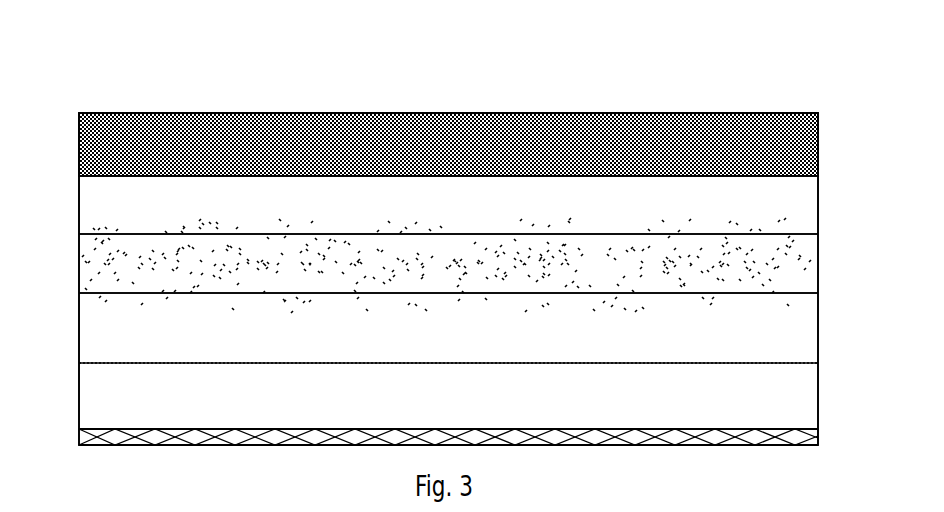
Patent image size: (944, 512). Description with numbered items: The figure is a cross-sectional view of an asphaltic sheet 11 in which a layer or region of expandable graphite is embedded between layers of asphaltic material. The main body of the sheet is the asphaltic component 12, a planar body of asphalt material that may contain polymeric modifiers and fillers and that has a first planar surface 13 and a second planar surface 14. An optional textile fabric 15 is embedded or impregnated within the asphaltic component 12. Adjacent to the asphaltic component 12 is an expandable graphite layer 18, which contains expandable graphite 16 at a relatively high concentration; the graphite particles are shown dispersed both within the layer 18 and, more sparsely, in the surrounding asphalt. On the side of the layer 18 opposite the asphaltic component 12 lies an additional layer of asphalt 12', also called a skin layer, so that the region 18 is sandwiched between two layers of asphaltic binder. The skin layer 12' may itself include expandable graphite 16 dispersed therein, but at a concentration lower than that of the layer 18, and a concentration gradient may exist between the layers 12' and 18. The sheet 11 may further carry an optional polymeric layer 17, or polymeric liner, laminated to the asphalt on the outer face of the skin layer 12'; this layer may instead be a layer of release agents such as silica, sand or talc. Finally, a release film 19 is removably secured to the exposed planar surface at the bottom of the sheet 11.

The asphaltic sheet 11 is at (312, 98).
The asphaltic component 12 is at (476, 310).
The skin layer 12' is at (475, 205).
The first planar surface 13 is at (170, 297).
The second planar surface 14 is at (138, 428).
The textile fabric 15 is at (757, 364).
The expandable graphite 16 is at (758, 305).
The polymeric layer 17 is at (79, 152).
The expandable graphite layer 18 is at (77, 269).
The release film 19 is at (660, 447).